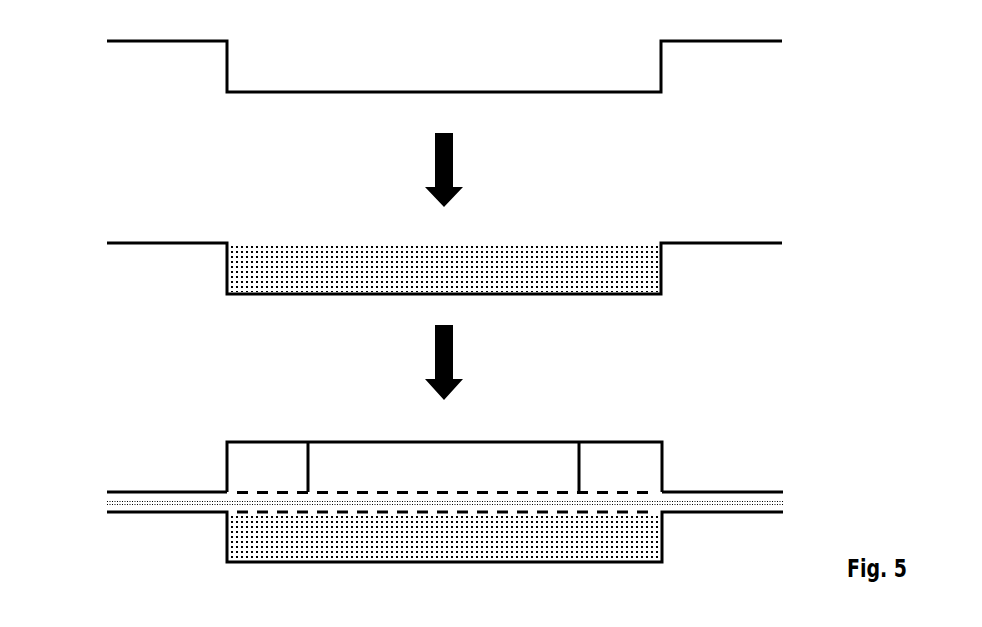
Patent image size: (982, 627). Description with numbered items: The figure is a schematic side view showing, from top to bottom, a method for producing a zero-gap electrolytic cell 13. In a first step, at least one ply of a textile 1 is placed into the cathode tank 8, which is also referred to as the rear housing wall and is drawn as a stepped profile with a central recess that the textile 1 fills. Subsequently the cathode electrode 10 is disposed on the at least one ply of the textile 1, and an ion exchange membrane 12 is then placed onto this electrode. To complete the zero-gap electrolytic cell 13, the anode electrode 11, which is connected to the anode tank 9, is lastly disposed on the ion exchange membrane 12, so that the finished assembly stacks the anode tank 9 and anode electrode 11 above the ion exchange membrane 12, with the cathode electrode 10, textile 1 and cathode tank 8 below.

The cathode tank 8 is at (225, 77).
The textile 1 is at (635, 240).
The anode tank 9 is at (225, 440).
The anode electrode 11 is at (622, 488).
The ion exchange membrane 12 is at (788, 502).
The zero-gap electrolytic cell 13 is at (140, 542).
The cathode electrode 10 is at (623, 514).